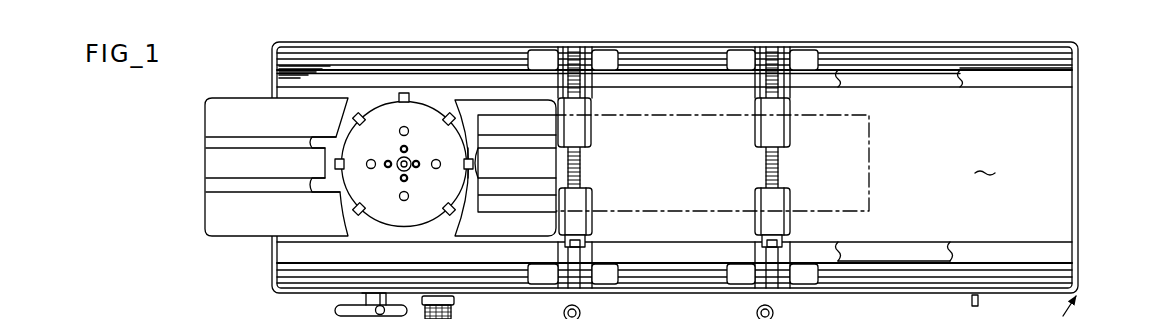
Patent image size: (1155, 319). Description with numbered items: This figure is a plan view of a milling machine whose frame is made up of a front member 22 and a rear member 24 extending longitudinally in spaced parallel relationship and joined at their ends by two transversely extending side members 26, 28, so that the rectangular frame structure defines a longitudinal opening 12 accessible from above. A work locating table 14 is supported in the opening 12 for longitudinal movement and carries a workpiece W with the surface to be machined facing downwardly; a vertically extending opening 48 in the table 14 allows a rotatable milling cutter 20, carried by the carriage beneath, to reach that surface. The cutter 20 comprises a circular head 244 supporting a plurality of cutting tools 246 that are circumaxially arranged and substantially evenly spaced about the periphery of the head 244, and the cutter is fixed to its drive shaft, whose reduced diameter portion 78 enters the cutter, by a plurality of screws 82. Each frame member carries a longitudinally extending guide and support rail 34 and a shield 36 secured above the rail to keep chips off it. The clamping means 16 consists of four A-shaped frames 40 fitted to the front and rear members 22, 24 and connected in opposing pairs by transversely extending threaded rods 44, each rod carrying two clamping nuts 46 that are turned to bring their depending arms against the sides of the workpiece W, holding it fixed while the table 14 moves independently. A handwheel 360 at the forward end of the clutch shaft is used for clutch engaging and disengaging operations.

The longitudinal opening 12 is at (986, 164).
The work locating table 14 is at (228, 246).
The clamping means 16 is at (748, 219).
The milling cutter 20 is at (362, 139).
The front member 22 is at (995, 313).
The rear member 24 is at (1018, 45).
The side member 26 is at (274, 73).
The side member 28 is at (1084, 110).
The guide and support rail 34 is at (903, 84).
The shield 36 is at (284, 70).
The A-shaped frame 40 is at (608, 63).
The threaded rod 44 is at (590, 164).
The clamping nut 46 is at (592, 133).
The opening 48 is at (345, 120).
The reduced diameter portion 78 is at (410, 158).
The screw 82 is at (410, 170).
The circular head 244 is at (357, 183).
The cutting tool 246 is at (402, 230).
The handwheel 360 is at (340, 310).
The workpiece W is at (878, 162).